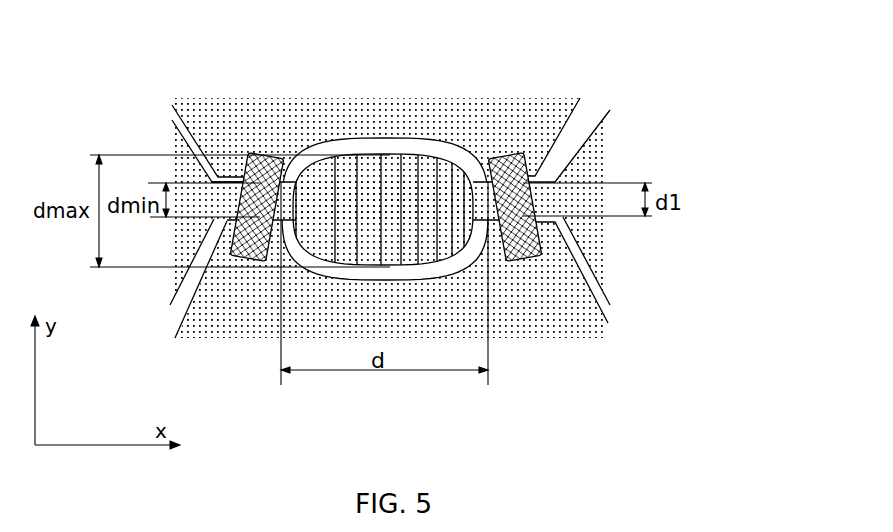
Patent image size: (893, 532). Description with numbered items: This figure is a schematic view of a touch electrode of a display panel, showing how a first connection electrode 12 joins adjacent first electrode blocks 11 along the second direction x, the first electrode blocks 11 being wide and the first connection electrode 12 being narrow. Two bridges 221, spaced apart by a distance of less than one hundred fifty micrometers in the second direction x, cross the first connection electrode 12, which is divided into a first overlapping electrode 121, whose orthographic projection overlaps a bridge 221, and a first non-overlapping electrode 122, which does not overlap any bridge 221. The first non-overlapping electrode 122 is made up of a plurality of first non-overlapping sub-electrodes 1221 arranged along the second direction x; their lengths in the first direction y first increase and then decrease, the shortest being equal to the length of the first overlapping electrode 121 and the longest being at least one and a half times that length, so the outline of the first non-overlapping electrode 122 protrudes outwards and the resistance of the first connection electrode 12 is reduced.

The first electrode block 11 is at (603, 165).
The first connection electrode 12 is at (504, 192).
The first overlapping electrode 121 is at (537, 197).
The first non-overlapping electrode 122 is at (511, 192).
The first non-overlapping sub-electrode 1221 is at (340, 177).
The bridge 221 is at (259, 156).